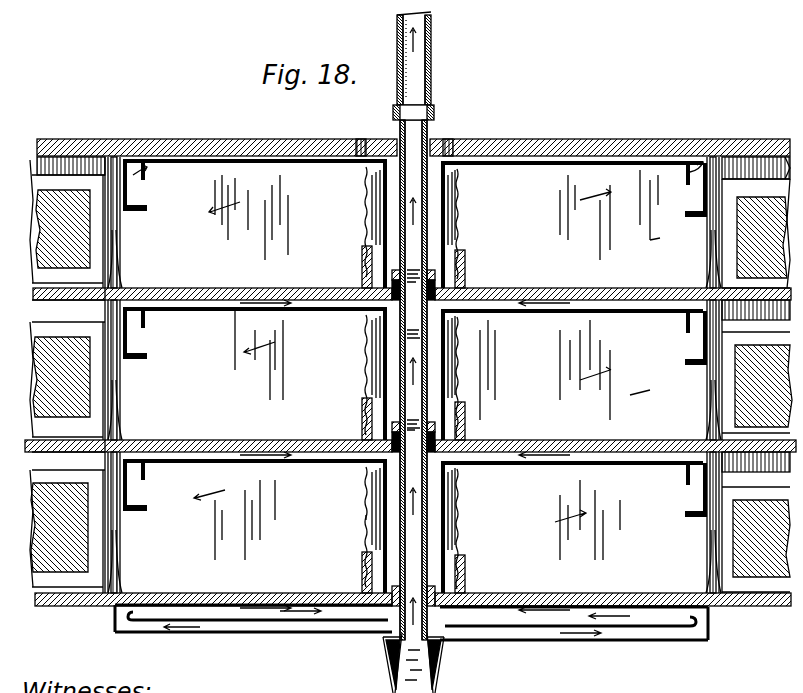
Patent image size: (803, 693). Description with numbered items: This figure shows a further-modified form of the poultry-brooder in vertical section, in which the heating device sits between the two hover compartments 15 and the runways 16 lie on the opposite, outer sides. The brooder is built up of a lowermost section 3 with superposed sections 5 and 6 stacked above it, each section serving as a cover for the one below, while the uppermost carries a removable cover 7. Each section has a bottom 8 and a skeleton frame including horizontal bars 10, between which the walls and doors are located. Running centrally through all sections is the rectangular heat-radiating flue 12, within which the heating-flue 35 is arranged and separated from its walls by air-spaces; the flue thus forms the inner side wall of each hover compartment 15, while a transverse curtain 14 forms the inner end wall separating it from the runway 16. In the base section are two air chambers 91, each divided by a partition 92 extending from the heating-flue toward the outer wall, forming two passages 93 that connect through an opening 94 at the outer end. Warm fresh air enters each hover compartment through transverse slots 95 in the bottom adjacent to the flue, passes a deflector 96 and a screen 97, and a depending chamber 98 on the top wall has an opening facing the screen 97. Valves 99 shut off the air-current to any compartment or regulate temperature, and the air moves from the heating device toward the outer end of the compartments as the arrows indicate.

The lowermost section 3 is at (528, 606).
The superposed section 5 is at (642, 403).
The superposed section 6 is at (658, 249).
The removable cover 7 is at (413, 136).
The bottom 8 is at (557, 290).
The horizontal bars 10 is at (757, 168).
The heat-radiating flue 12 is at (430, 374).
The transverse curtain 14 is at (150, 247).
The hover compartment 15 is at (596, 546).
The runway 16 is at (411, 375).
The heating-flue 35 is at (396, 516).
The air chamber 91 is at (412, 637).
The partition 92 is at (332, 627).
The passage 93 is at (182, 610).
The opening 94 is at (114, 624).
The transverse slot 95 is at (364, 280).
The deflector 96 is at (368, 232).
The screen 97 is at (468, 490).
The depending chamber 98 is at (144, 192).
The valve 99 is at (368, 322).